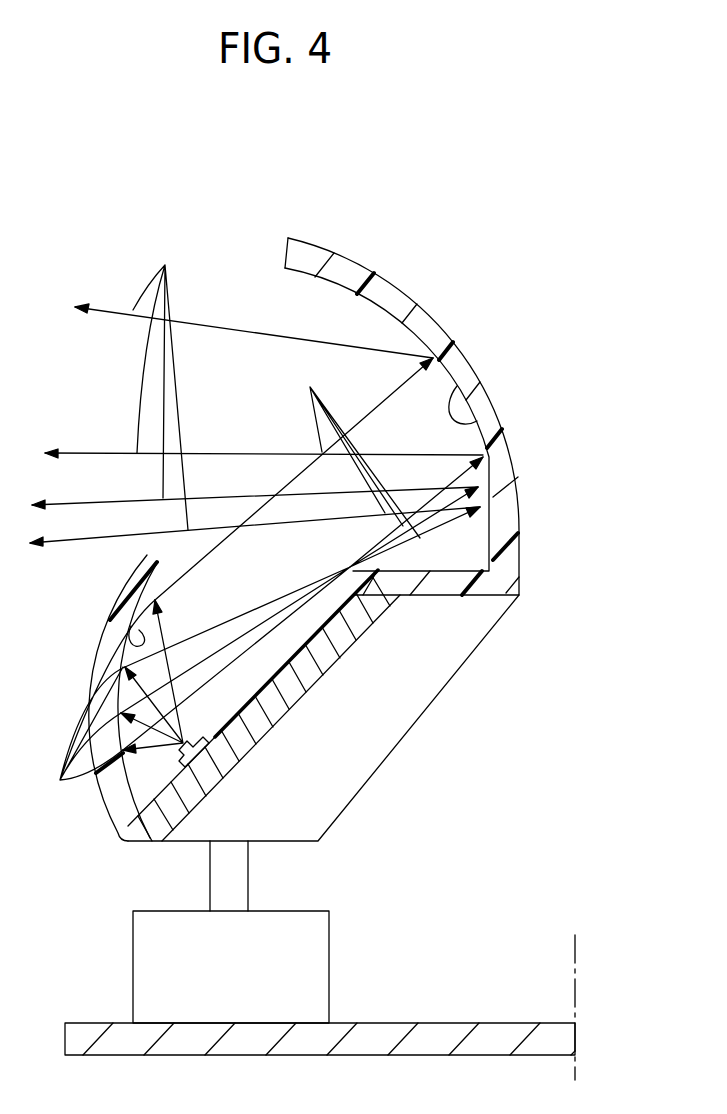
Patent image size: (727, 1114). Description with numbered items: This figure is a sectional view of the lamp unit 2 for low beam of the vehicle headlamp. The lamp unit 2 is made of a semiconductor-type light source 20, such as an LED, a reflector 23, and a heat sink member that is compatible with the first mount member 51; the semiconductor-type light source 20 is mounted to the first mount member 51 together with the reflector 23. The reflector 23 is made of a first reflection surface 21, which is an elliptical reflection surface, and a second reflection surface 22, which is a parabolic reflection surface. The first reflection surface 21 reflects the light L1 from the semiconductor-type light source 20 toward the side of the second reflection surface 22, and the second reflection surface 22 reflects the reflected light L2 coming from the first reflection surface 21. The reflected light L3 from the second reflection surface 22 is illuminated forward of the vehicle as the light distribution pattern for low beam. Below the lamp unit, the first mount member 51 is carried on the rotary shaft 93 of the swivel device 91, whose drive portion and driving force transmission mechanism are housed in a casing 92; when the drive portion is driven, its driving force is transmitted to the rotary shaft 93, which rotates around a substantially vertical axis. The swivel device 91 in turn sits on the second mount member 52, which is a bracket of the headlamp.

The lamp unit for low beam 2 is at (320, 243).
The reflector 23 is at (405, 285).
The second reflection surface 22 is at (468, 380).
The first reflection surface 21 is at (131, 628).
The semiconductor-type light source 20 is at (94, 705).
The first mount member 51 is at (407, 737).
The rotary shaft 93 is at (252, 883).
The swivel device 91 is at (289, 954).
The casing 92 is at (313, 985).
The second mount member 52 is at (440, 1022).
The light L1 is at (90, 704).
The reflected light L2 is at (352, 449).
The reflected light L3 is at (161, 383).